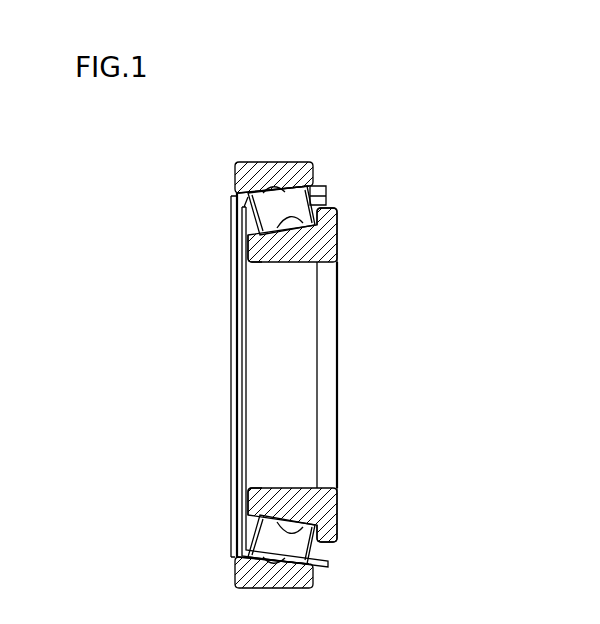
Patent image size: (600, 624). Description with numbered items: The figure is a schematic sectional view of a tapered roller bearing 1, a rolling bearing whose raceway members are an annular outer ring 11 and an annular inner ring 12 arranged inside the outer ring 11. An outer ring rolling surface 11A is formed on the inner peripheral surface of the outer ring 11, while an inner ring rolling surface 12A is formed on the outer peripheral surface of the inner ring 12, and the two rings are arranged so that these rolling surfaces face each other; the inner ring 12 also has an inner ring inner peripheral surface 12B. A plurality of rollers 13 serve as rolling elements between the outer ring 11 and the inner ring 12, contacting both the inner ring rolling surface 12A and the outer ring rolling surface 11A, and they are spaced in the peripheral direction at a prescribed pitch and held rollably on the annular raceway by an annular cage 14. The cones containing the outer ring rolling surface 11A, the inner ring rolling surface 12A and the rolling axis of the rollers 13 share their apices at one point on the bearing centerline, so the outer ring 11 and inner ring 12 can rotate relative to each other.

The tapered roller bearing 1 is at (382, 114).
The outer ring 11 is at (251, 182).
The outer ring rolling surface 11A is at (283, 163).
The inner ring 12 is at (255, 251).
The inner ring rolling surface 12A is at (332, 242).
The inner ring inner peripheral surface 12B is at (288, 265).
The roller 13 is at (293, 207).
The cage 14 is at (318, 189).